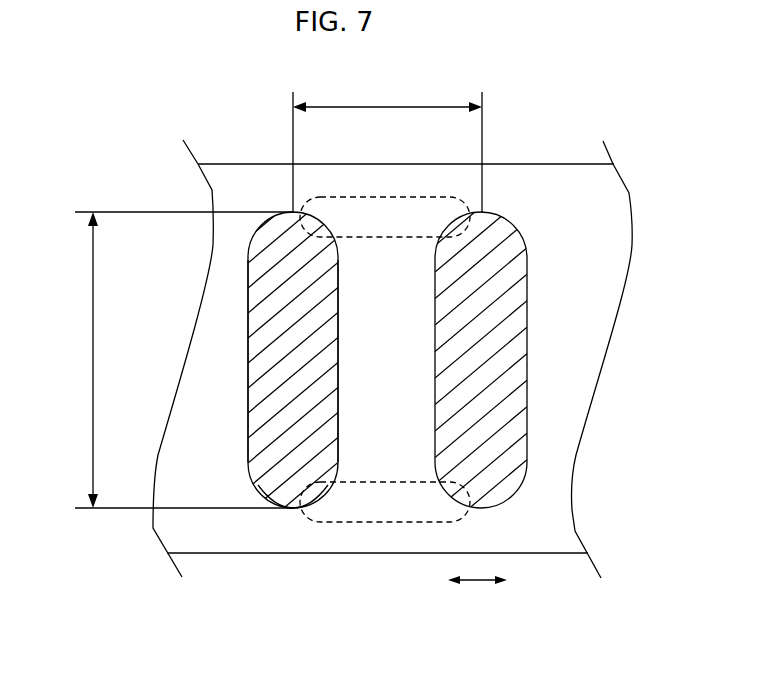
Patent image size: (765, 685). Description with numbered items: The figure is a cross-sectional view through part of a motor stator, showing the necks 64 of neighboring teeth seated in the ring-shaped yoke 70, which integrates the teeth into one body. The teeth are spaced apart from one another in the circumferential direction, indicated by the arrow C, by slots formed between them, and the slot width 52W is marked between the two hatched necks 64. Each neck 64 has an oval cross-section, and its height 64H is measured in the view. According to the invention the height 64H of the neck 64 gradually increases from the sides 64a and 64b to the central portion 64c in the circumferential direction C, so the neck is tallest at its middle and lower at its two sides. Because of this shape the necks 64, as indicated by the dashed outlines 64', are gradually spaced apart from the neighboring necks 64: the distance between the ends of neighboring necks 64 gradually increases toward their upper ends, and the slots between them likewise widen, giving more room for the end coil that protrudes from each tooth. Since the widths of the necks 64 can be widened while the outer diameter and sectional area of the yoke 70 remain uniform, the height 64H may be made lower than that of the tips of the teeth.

The neck 64 is at (387, 350).
The neck (spaced-apart position) 64' is at (385, 359).
The side of neck 64a is at (248, 467).
The side of neck 64b is at (337, 467).
The central portion of neck 64c is at (292, 508).
The yoke 70 is at (547, 527).
The slot width 52W is at (387, 145).
The height of neck 64H is at (165, 360).
The circumferential direction C is at (477, 592).